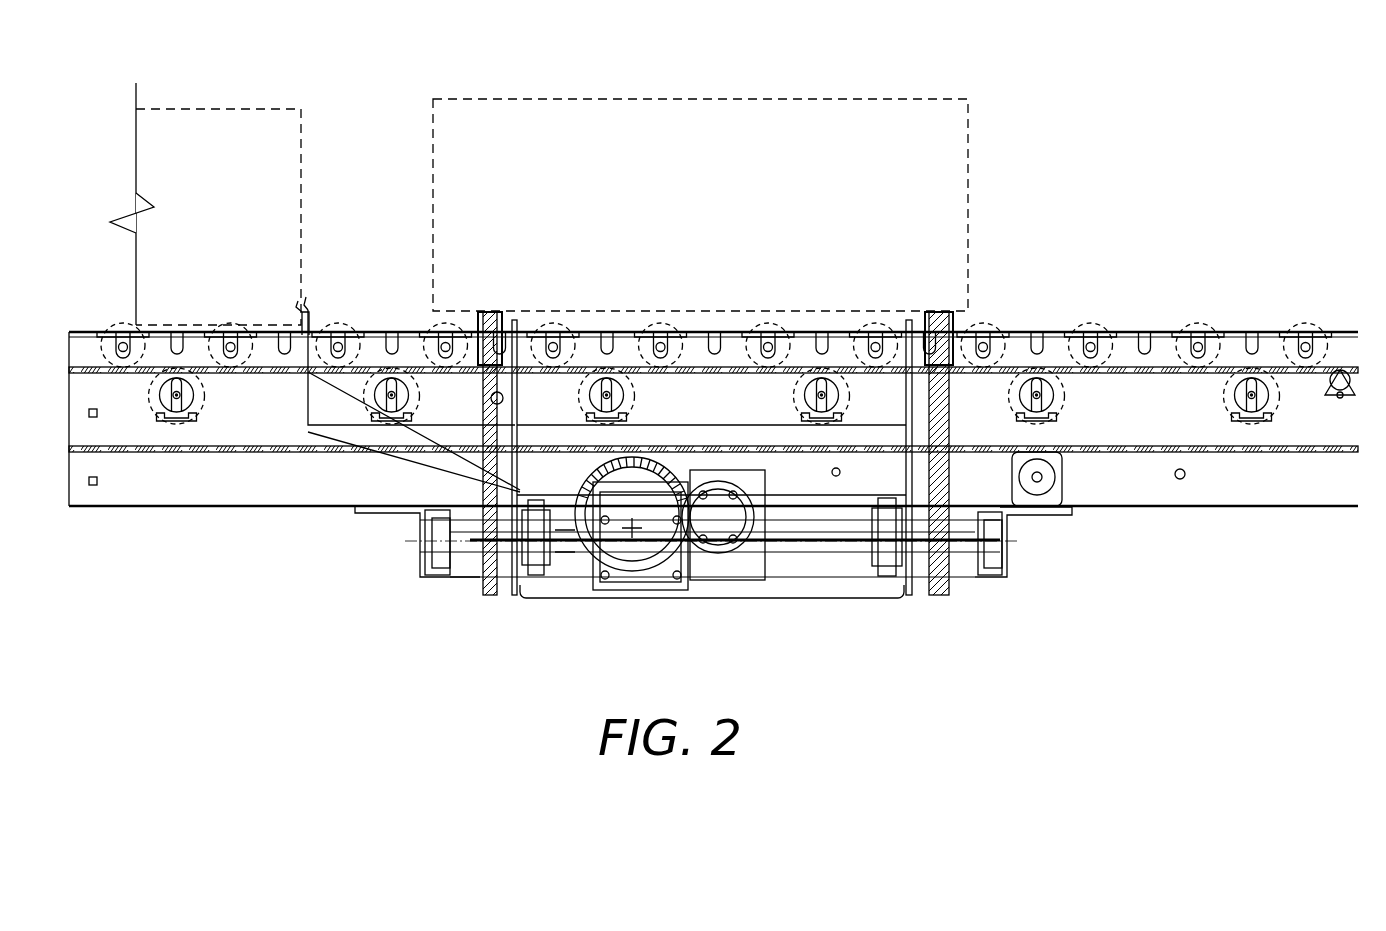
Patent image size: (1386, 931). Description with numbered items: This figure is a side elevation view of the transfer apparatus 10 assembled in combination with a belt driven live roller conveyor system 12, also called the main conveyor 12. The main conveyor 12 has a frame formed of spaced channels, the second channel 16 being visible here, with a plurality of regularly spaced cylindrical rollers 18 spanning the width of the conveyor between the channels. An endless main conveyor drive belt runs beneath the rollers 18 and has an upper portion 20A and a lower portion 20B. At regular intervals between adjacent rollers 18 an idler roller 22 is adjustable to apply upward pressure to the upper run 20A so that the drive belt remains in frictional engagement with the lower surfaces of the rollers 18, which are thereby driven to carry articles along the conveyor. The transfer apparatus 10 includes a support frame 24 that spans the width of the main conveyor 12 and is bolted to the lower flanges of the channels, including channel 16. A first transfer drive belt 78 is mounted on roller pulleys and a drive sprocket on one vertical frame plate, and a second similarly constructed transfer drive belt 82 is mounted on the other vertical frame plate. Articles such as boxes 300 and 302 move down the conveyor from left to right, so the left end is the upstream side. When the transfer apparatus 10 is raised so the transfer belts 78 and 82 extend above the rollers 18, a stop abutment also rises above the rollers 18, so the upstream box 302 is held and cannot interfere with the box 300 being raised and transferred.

The transfer apparatus 10 is at (662, 423).
The belt driven live roller conveyor system 12 is at (713, 412).
The second channel 16 is at (713, 412).
The cylindrical rollers 18 is at (990, 320).
The upper portion of main conveyor drive belt 20A is at (1158, 372).
The lower portion of main conveyor drive belt 20B is at (1147, 452).
The idler roller 22 is at (799, 370).
The support frame 24 is at (375, 512).
The first transfer drive belt 78 is at (500, 327).
The second transfer drive belt 82 is at (935, 330).
The box 300 is at (720, 98).
The box 302 is at (206, 110).